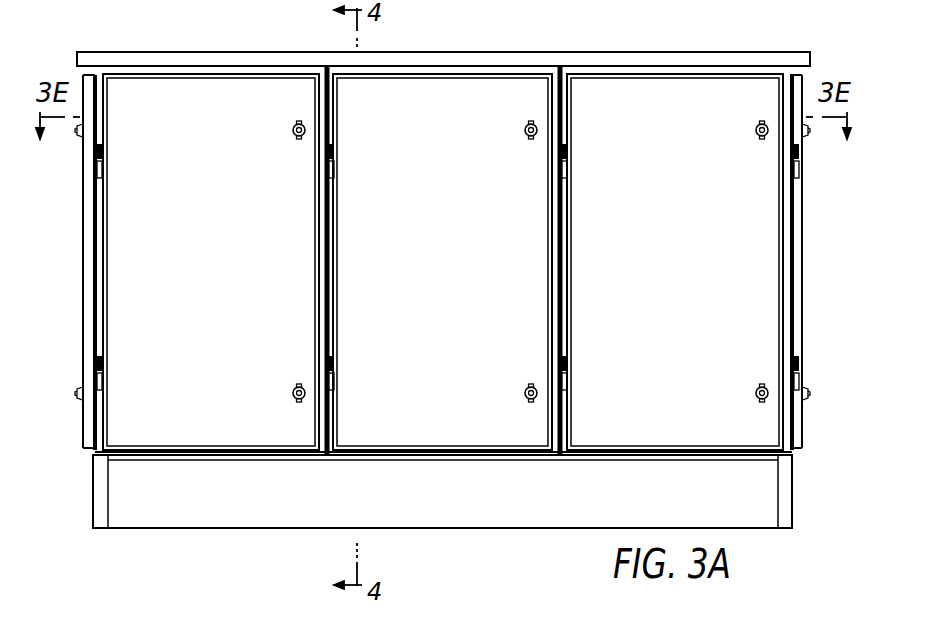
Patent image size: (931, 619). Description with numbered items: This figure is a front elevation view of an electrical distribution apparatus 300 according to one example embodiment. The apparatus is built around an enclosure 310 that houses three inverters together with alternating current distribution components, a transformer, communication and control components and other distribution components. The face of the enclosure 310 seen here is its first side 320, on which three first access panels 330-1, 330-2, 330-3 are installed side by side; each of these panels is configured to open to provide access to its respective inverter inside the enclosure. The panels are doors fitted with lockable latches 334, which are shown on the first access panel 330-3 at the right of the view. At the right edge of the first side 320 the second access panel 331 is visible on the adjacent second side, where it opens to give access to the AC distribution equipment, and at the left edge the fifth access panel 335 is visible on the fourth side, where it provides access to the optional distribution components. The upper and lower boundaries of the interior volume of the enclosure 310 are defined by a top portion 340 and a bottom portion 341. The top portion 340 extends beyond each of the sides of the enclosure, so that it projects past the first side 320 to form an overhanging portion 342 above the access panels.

The electrical distribution apparatus 300 is at (220, 31).
The enclosure 310 is at (716, 49).
The first side 320 is at (312, 508).
The first access panel 330-1 is at (233, 432).
The first access panel 330-2 is at (392, 425).
The first access panel 330-3 is at (617, 430).
The second access panel 331 is at (803, 250).
The lockable latches 334 is at (755, 129).
The fifth access panel 335 is at (83, 213).
The top portion 340 is at (548, 52).
The bottom portion 341 is at (183, 532).
The overhanging portion 342 is at (78, 71).